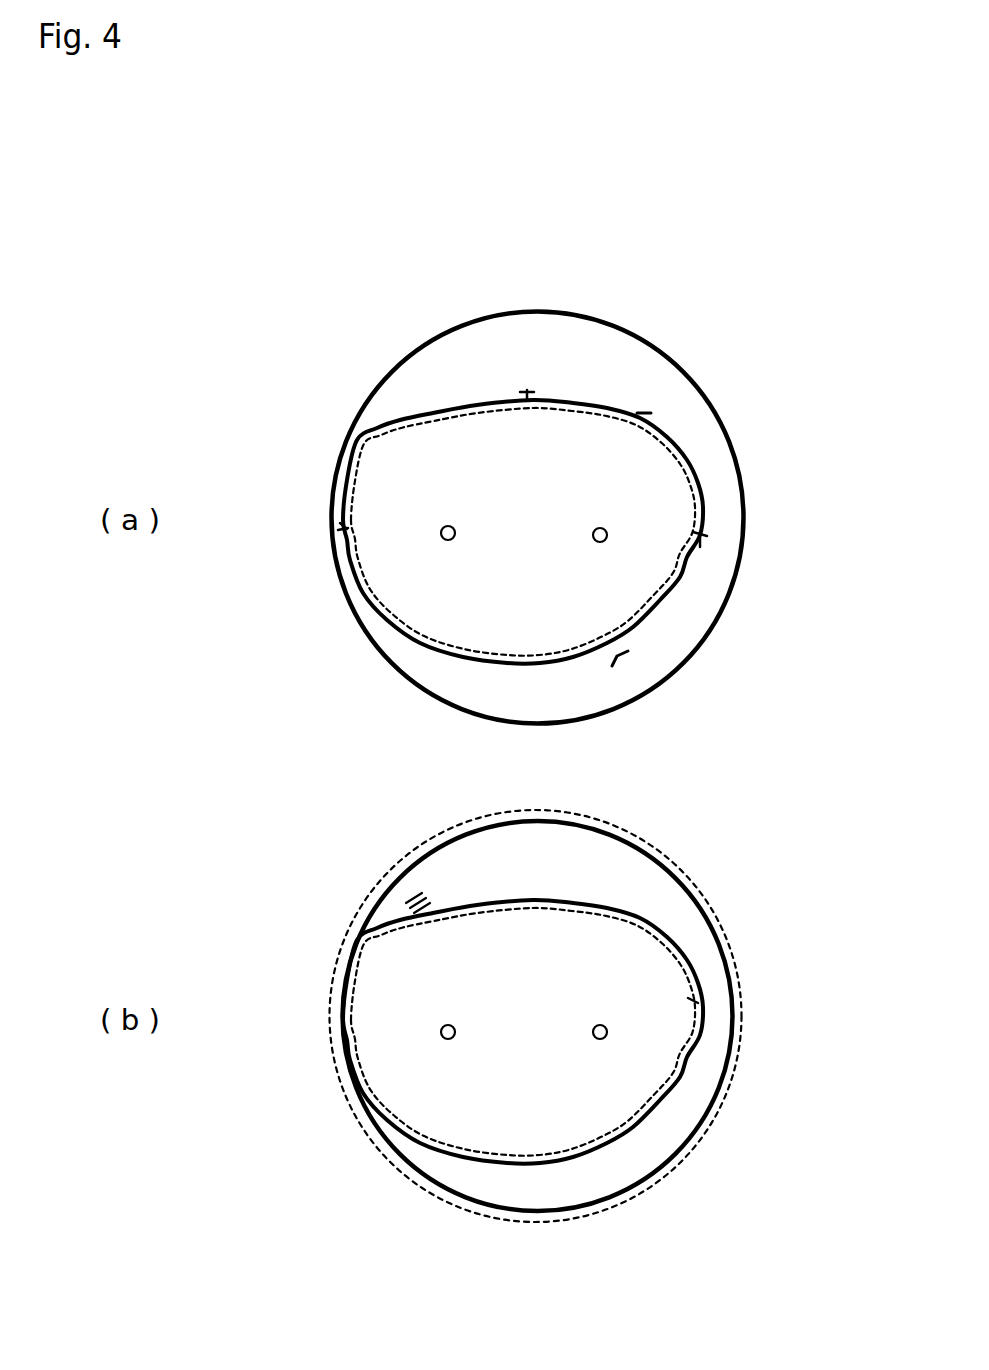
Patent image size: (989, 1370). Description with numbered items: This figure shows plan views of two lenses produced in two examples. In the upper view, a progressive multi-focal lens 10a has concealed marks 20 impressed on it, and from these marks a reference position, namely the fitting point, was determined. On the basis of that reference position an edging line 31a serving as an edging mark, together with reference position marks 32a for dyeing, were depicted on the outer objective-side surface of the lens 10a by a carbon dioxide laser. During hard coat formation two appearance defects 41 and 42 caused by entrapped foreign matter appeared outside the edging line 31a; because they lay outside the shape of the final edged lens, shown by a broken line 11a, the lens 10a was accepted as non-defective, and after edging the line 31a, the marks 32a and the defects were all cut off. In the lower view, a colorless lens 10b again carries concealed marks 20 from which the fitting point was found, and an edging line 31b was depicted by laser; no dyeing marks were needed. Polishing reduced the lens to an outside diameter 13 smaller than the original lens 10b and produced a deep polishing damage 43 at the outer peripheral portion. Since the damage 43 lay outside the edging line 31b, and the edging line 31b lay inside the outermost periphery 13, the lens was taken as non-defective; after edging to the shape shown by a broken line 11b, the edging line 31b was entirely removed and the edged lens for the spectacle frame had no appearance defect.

The progressive multi-focal lens 10a is at (718, 412).
The lens 10b is at (723, 925).
The broken line 11a is at (490, 397).
The broken line 11b is at (693, 1000).
The outside diameter 13 is at (357, 918).
The concealed marks 20 is at (448, 526).
The edging line 31a is at (702, 497).
The edging line 31b is at (390, 923).
The reference position marks for dyeing 32a is at (527, 393).
The appearance defect 41 is at (645, 413).
The appearance defect 42 is at (621, 660).
The polishing damage 43 is at (415, 890).